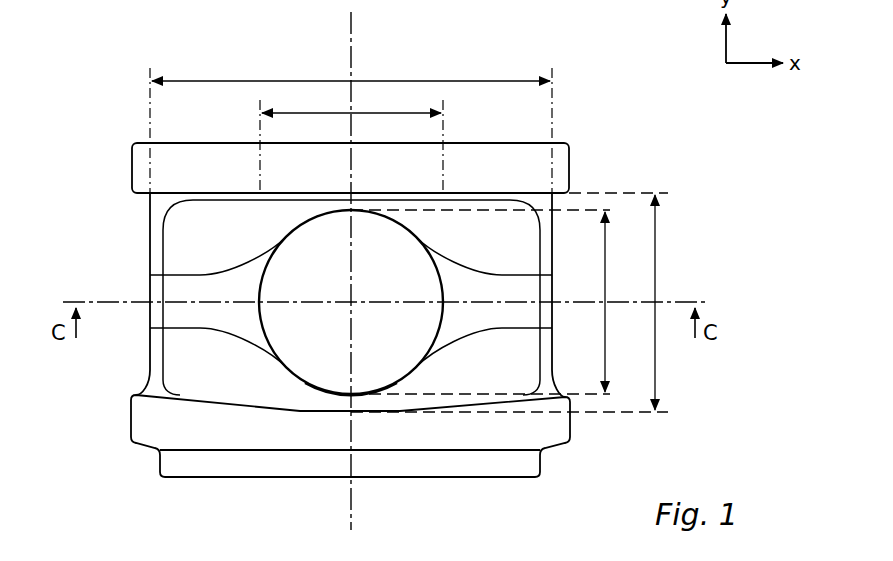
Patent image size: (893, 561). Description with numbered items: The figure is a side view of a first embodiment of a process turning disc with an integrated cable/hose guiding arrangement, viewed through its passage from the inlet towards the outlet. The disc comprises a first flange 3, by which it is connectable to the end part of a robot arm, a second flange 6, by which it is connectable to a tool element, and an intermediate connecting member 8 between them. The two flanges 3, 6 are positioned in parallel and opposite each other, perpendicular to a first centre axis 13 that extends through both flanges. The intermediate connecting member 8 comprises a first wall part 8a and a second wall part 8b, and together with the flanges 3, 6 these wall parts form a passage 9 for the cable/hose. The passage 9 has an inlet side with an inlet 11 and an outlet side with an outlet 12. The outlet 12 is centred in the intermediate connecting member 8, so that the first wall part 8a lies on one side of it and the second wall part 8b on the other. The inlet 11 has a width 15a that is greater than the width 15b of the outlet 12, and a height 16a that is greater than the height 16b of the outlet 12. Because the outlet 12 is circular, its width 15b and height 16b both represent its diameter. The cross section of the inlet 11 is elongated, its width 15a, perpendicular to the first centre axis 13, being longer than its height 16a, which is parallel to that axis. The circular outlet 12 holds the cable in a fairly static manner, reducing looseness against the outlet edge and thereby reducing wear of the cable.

The first flange 3 is at (148, 422).
The second flange 6 is at (136, 166).
The intermediate connecting member 8 is at (373, 295).
The first wall part 8a is at (150, 362).
The second wall part 8b is at (552, 352).
The passage 9 is at (330, 367).
The inlet 11 is at (180, 235).
The outlet 12 is at (305, 383).
The first centre axis 13 is at (351, 44).
The width of the inlet 15a is at (351, 125).
The width of the outlet 15b is at (351, 141).
The height of the inlet 16a is at (509, 302).
The height of the outlet 16b is at (480, 302).